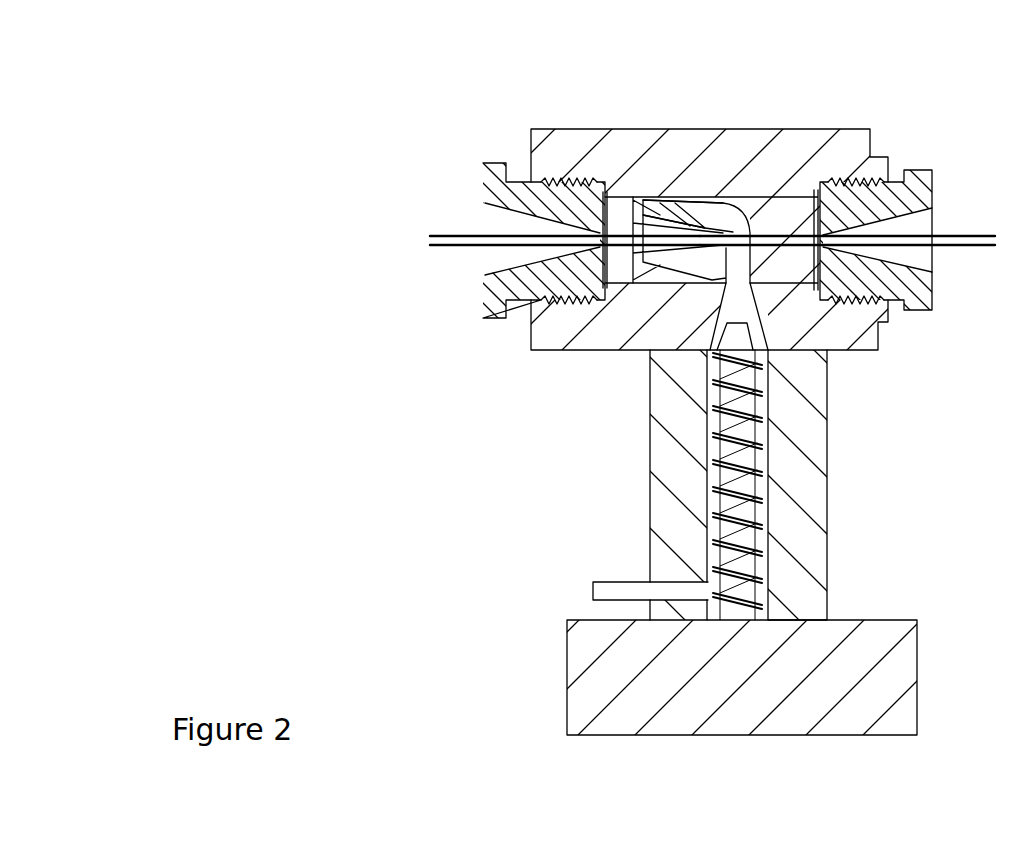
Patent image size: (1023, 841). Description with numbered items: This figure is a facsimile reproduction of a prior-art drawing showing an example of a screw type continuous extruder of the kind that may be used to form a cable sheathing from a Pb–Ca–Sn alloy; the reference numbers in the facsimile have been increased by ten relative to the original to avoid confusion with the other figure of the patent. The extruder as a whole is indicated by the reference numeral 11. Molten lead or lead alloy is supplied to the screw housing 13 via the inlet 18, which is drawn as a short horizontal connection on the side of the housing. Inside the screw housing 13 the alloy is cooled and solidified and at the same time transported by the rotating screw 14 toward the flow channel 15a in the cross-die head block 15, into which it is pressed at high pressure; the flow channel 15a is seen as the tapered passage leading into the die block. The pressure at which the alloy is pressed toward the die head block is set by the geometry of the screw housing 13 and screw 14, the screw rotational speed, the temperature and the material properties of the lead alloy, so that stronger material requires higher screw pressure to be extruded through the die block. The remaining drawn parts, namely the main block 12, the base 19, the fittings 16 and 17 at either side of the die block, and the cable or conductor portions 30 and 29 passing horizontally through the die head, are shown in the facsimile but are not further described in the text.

The fiber feedthrough assembly 11 is at (881, 108).
The housing block 12 is at (628, 129).
The screw housing 13 is at (662, 462).
The rotating screw 14 is at (762, 457).
The cross-die head block 15 is at (775, 215).
The flow channel 15a is at (703, 198).
The left compression fitting 16 is at (512, 182).
The right compression fitting 17 is at (922, 189).
The inlet 18 is at (620, 580).
The base plate 19 is at (905, 661).
The optical fiber (outlet side) 29 is at (975, 248).
The optical fiber (inlet side) 30 is at (448, 248).